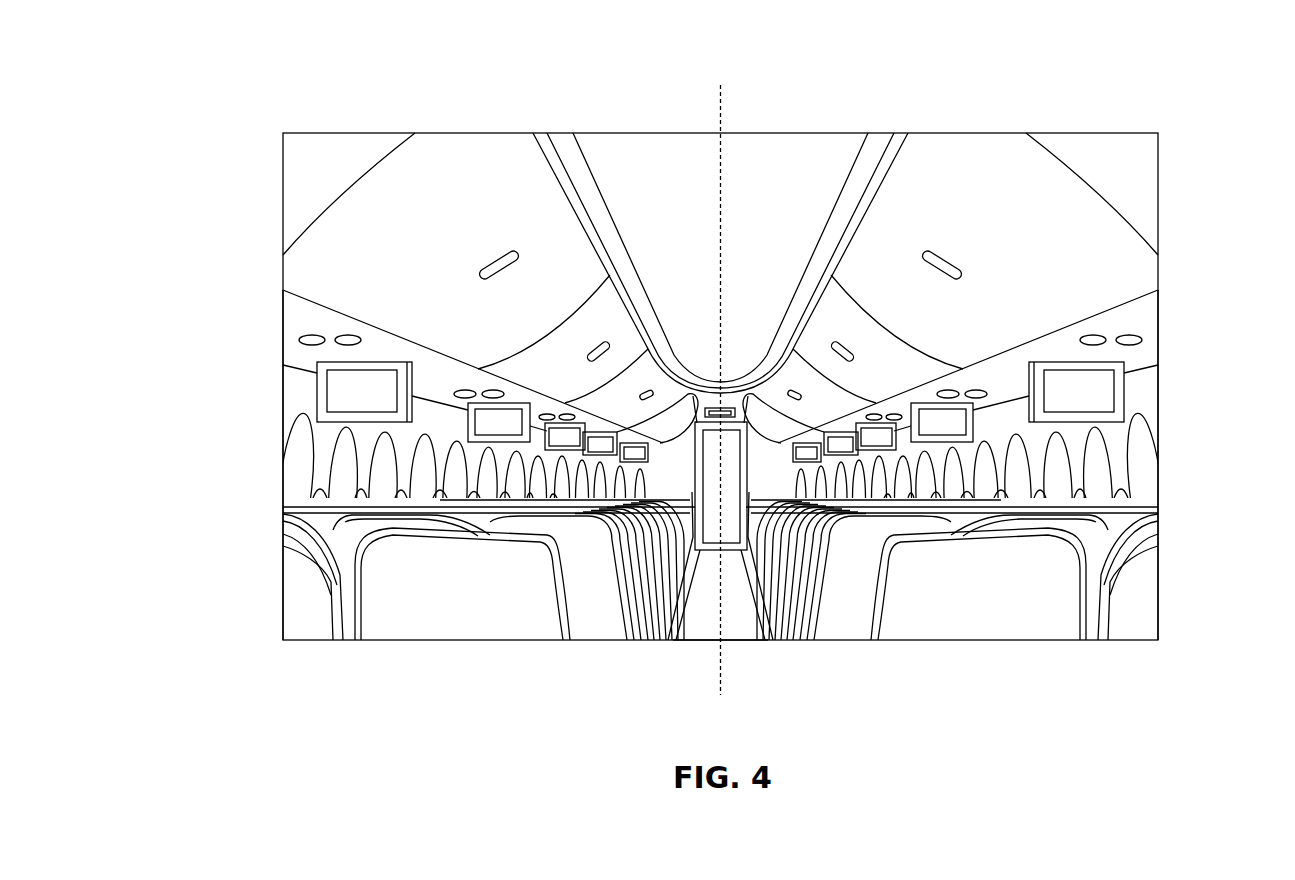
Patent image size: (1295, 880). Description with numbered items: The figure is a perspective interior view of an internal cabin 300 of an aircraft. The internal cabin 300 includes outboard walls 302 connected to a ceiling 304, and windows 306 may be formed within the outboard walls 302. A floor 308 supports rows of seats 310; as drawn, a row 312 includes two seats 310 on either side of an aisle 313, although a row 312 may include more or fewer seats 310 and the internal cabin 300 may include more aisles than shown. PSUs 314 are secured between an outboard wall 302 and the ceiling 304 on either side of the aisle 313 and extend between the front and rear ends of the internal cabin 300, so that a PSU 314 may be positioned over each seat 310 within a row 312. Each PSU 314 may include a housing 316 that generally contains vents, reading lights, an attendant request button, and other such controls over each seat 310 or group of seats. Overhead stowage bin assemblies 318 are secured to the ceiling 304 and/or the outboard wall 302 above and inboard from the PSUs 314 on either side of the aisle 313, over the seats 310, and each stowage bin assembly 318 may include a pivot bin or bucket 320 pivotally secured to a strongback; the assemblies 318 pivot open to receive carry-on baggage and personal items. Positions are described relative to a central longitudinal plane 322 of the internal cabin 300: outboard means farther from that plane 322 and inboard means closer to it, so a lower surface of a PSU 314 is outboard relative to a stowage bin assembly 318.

The internal cabin 300 is at (230, 90).
The outboard wall 302 is at (293, 393).
The ceiling 304 is at (781, 133).
The window 306 is at (318, 497).
The floor 308 is at (708, 620).
The seat 310 is at (458, 628).
The row 312 is at (290, 598).
The aisle 313 is at (743, 620).
The PSU 314 is at (315, 344).
The housing 316 is at (293, 332).
The overhead stowage bin assembly 318 is at (393, 190).
The pivot bin 320 is at (463, 152).
The central longitudinal plane 322 is at (719, 100).